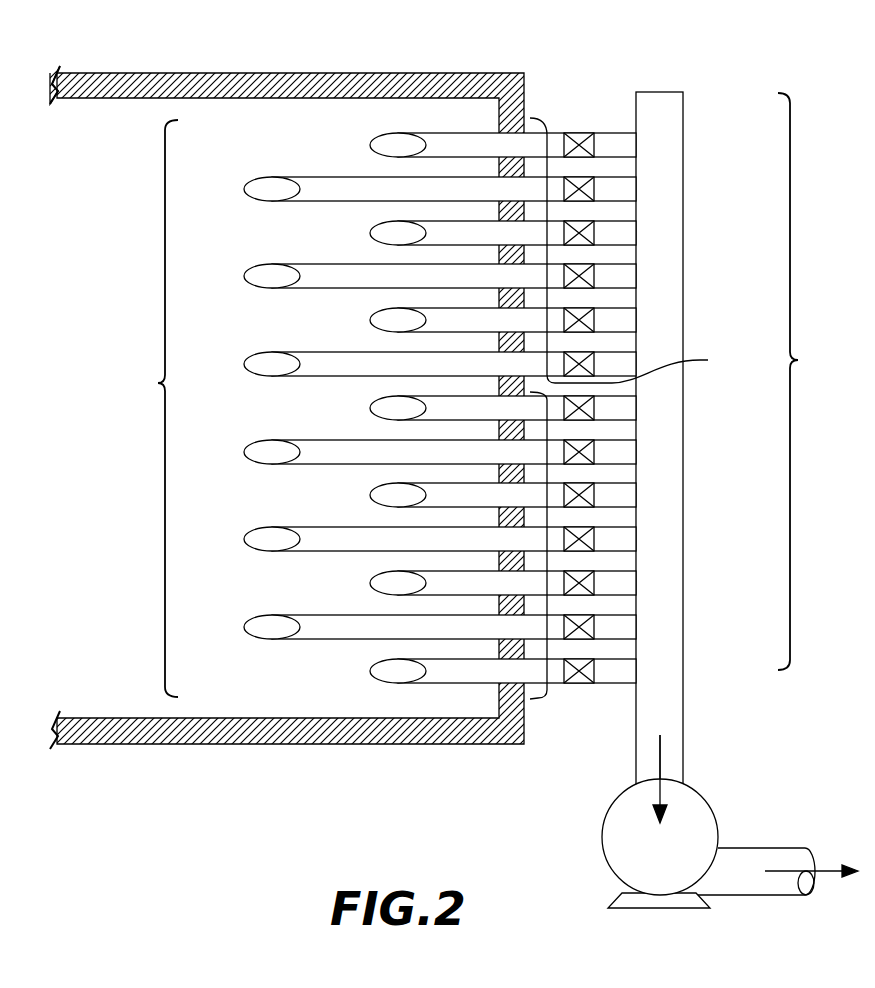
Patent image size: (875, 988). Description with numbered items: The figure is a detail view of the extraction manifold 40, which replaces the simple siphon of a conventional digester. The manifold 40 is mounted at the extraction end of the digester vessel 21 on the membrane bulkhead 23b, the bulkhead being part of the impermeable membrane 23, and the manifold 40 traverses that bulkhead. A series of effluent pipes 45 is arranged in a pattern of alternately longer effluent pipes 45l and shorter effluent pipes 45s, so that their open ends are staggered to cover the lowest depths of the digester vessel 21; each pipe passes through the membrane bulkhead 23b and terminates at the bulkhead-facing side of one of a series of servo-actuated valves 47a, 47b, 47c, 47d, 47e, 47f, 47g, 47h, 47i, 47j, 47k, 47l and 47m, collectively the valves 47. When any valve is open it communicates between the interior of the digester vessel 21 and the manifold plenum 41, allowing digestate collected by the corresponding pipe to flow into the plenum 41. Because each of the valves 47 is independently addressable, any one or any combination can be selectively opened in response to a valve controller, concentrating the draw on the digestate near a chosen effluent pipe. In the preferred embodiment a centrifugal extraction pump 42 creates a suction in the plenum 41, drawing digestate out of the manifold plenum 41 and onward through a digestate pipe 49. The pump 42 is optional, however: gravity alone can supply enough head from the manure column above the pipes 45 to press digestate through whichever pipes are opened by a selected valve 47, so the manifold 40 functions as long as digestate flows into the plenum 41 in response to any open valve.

The extraction manifold 40 is at (479, 52).
The digester vessel 21 is at (98, 336).
The impermeable membrane 23 is at (290, 73).
The membrane bulkhead 23b is at (641, 408).
The manifold plenum 41 is at (683, 697).
The extraction pump 42 is at (616, 843).
The effluent pipes 45 is at (148, 408).
The shorter effluent pipes 45s is at (372, 145).
The longer effluent pipes 45l is at (246, 189).
The servo-actuated valves 47 is at (806, 381).
The servo-actuated valve 47a is at (587, 145).
The servo-actuated valve 47b is at (587, 189).
The servo-actuated valve 47c is at (587, 233).
The servo-actuated valve 47d is at (587, 276).
The servo-actuated valve 47e is at (587, 320).
The servo-actuated valve 47f is at (587, 364).
The servo-actuated valve 47g is at (587, 408).
The servo-actuated valve 47h is at (587, 452).
The servo-actuated valve 47i is at (587, 495).
The servo-actuated valve 47j is at (587, 539).
The servo-actuated valve 47k is at (587, 583).
The servo-actuated valve 47l is at (587, 627).
The servo-actuated valve 47m is at (587, 671).
The digestate pipe 49 is at (748, 884).